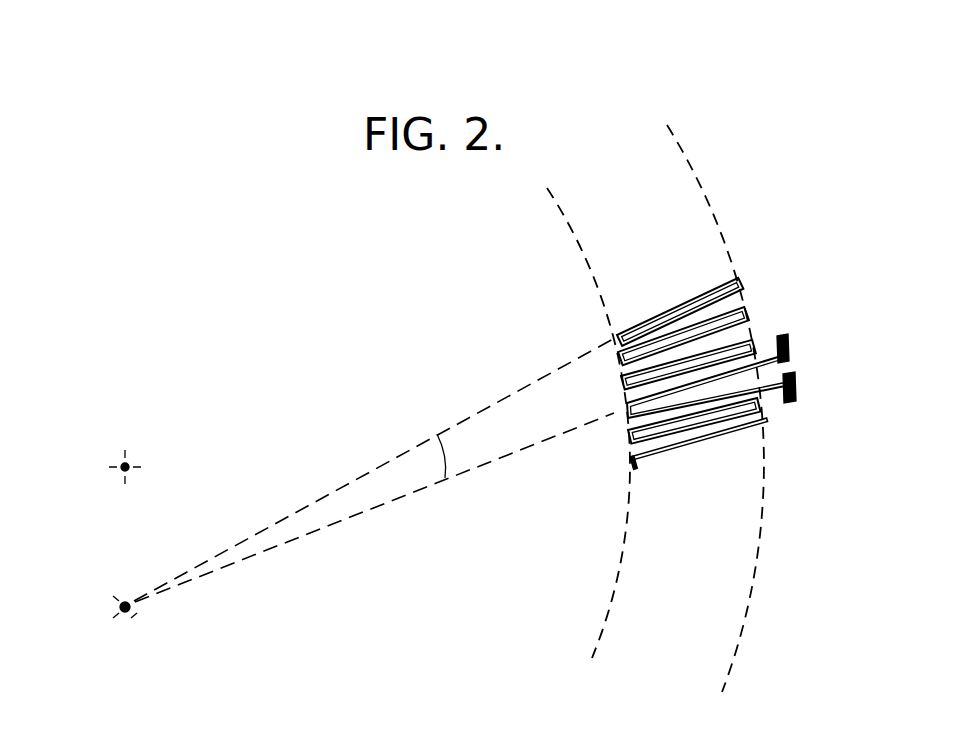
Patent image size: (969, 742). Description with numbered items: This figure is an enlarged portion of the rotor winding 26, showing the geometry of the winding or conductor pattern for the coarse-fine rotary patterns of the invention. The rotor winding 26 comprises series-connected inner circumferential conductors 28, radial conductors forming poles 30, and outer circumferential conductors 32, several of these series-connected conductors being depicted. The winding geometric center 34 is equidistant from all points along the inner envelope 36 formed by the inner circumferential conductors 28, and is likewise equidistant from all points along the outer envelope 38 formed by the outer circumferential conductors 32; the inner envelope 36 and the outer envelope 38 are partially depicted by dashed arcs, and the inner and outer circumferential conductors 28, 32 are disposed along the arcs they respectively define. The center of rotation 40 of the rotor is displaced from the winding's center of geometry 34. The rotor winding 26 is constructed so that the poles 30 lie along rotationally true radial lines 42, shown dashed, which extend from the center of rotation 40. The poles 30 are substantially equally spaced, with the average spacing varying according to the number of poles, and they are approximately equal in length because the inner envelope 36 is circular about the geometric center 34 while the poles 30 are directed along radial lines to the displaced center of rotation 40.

The rotor winding 26 is at (616, 438).
The inner circumferential conductors 28 is at (616, 356).
The poles 30 is at (688, 444).
The outer circumferential conductors 32 is at (750, 312).
The winding geometric center 34 is at (123, 462).
The inner envelope 36 is at (618, 566).
The outer envelope 38 is at (753, 578).
The center of rotation 40 is at (118, 604).
The radial lines 42 is at (438, 434).